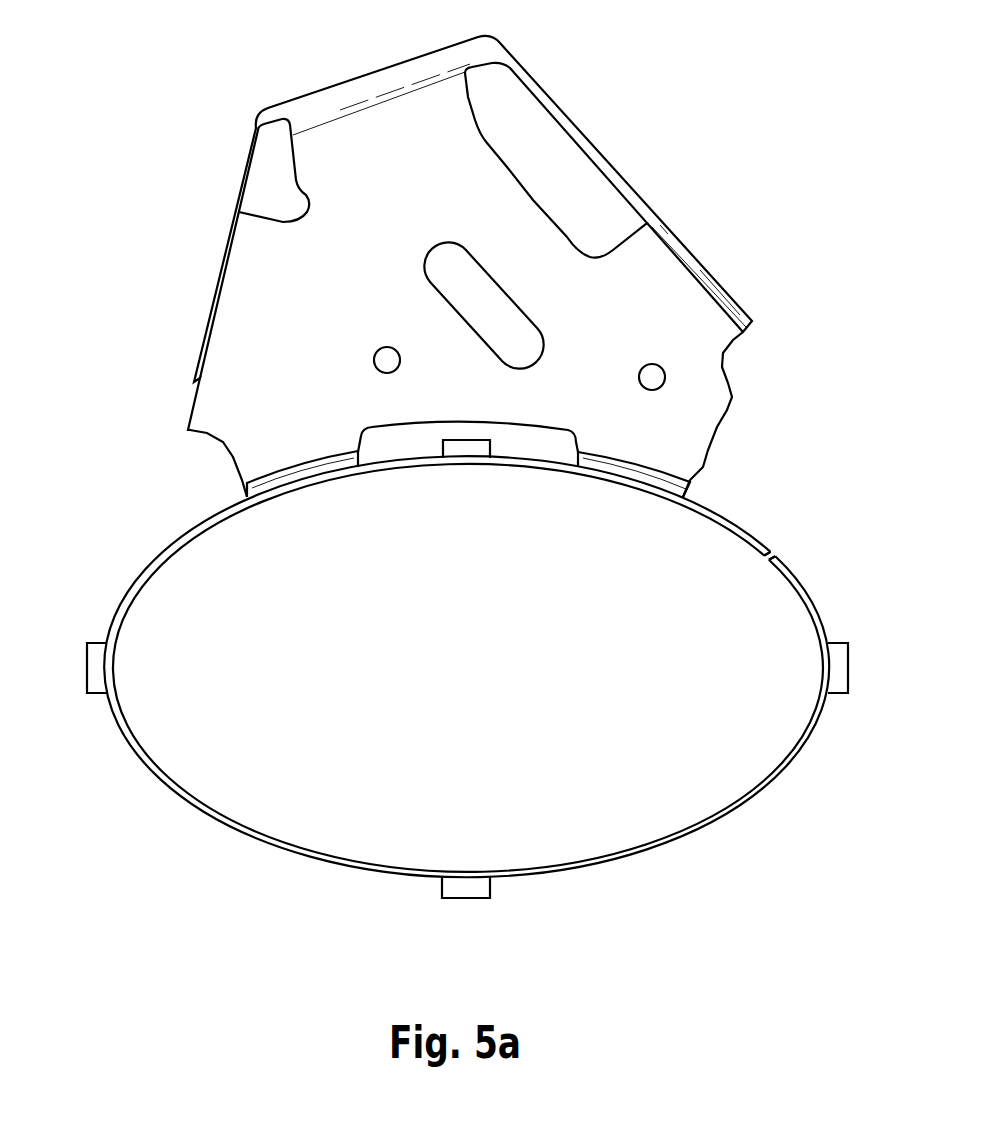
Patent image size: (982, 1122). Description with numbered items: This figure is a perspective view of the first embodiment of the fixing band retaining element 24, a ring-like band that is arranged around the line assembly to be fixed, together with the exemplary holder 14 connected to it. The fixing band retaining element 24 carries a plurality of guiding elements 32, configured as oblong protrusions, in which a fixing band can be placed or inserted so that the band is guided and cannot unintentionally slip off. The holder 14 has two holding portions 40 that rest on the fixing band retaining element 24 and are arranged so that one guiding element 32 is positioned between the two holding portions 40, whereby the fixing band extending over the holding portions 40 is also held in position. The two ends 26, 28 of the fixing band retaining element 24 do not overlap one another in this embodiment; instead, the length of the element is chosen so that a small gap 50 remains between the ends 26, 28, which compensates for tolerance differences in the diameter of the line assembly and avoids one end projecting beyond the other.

The holder 14 is at (378, 150).
The fixing band retaining element 24 is at (692, 836).
The end of the fixing band retaining element 26 is at (771, 548).
The end of the fixing band retaining element 28 is at (786, 566).
The guiding element 32 is at (469, 447).
The holding portion 40 is at (305, 470).
The gap 50 is at (790, 542).